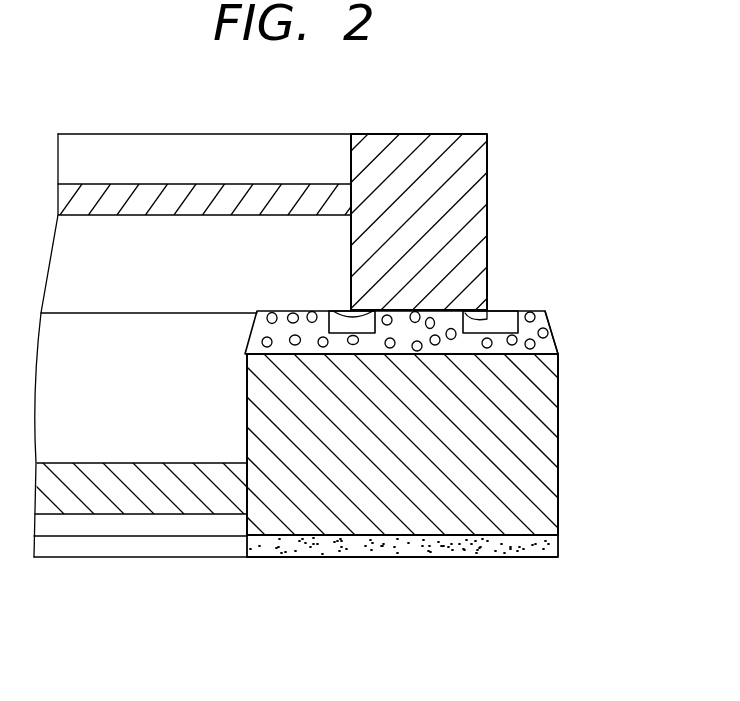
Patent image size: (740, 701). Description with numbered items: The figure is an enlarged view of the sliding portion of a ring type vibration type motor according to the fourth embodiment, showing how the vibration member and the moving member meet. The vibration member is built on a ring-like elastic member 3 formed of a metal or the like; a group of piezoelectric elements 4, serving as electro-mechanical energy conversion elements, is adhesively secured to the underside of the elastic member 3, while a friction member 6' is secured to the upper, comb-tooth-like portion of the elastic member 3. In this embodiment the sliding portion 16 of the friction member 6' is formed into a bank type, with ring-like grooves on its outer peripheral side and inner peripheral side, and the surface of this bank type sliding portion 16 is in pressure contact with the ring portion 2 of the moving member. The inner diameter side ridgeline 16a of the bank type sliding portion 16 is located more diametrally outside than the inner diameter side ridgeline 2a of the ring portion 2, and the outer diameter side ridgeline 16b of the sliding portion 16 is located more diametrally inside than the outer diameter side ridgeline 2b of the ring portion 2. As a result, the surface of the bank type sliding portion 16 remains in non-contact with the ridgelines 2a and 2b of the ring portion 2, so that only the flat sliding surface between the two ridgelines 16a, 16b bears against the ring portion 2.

The ring portion 2 is at (465, 134).
The inner diameter side ridgeline 2a is at (345, 309).
The outer diameter side ridgeline 2b is at (487, 305).
The elastic member 3 is at (548, 437).
The group of piezoelectric elements 4 is at (447, 557).
The friction member 6' is at (589, 334).
The sliding portion 16 is at (510, 313).
The inner diameter side ridgeline 16a is at (337, 309).
The outer diameter side ridgeline 16b is at (497, 307).